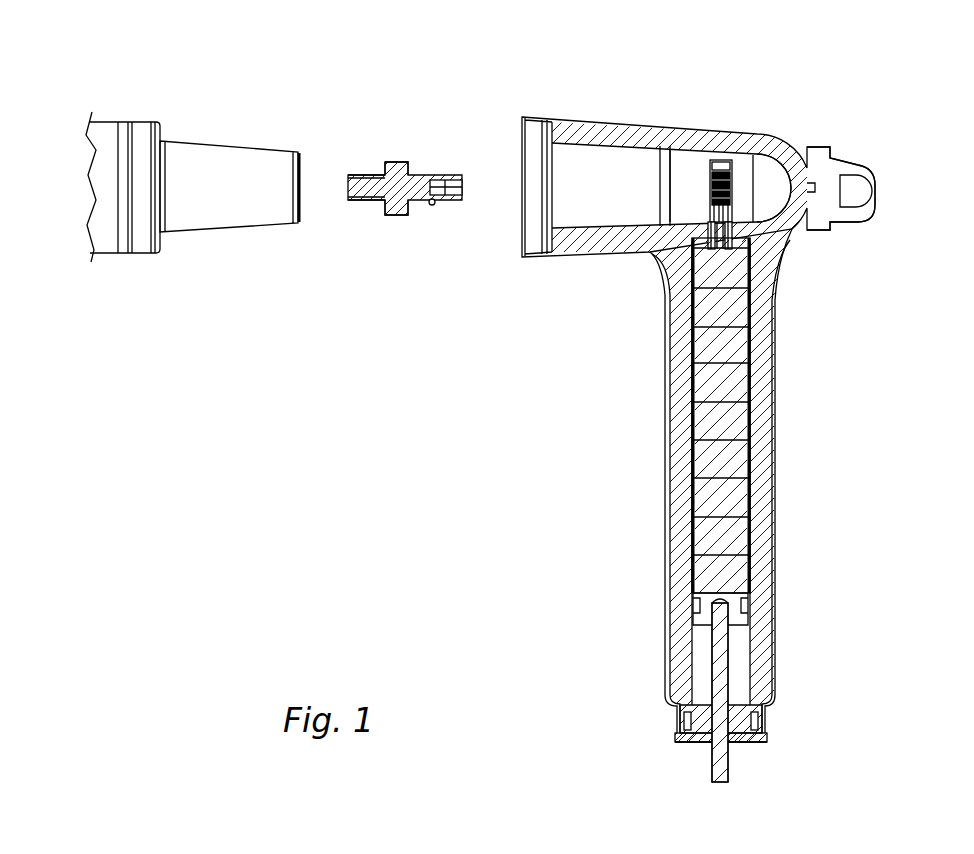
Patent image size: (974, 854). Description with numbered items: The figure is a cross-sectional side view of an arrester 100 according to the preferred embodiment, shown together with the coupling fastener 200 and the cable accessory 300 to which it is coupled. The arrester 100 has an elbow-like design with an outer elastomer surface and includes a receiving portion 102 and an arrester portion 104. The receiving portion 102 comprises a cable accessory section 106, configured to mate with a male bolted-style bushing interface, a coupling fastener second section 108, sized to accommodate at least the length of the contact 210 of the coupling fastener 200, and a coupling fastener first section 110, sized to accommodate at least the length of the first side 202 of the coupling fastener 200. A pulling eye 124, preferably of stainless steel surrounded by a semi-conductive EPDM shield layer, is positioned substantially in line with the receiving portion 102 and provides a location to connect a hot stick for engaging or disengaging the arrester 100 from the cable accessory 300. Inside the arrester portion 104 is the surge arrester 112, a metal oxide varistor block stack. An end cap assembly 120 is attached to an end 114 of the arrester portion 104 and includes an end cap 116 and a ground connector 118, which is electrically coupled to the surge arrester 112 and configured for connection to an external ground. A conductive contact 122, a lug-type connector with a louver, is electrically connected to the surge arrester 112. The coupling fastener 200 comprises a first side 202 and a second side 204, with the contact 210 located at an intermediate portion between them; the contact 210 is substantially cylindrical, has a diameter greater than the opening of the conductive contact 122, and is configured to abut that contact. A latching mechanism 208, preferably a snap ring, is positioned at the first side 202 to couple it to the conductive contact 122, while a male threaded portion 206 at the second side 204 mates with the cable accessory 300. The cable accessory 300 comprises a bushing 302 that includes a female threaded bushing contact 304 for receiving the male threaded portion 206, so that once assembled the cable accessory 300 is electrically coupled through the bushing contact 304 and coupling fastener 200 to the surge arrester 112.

The arrester 100 is at (740, 430).
The receiving portion 102 is at (740, 150).
The arrester portion 104 is at (735, 523).
The cable accessory section 106 is at (597, 183).
The coupling fastener second section 108 is at (690, 183).
The coupling fastener first section 110 is at (760, 182).
The surge arrester 112 is at (737, 385).
The end 114 is at (770, 735).
The end cap 116 is at (755, 742).
The ground connector 118 is at (666, 728).
The end cap assembly 120 is at (730, 708).
The conductive contact 122 is at (722, 157).
The pulling eye 124 is at (875, 203).
The coupling fastener 200 is at (407, 173).
The first side 202 is at (457, 163).
The second side 204 is at (362, 165).
The male threaded portion 206 is at (363, 202).
The latching mechanism 208 is at (443, 205).
The contact 210 is at (398, 215).
The cable accessory 300 is at (205, 170).
The bushing 302 is at (270, 154).
The bushing contact 304 is at (298, 213).